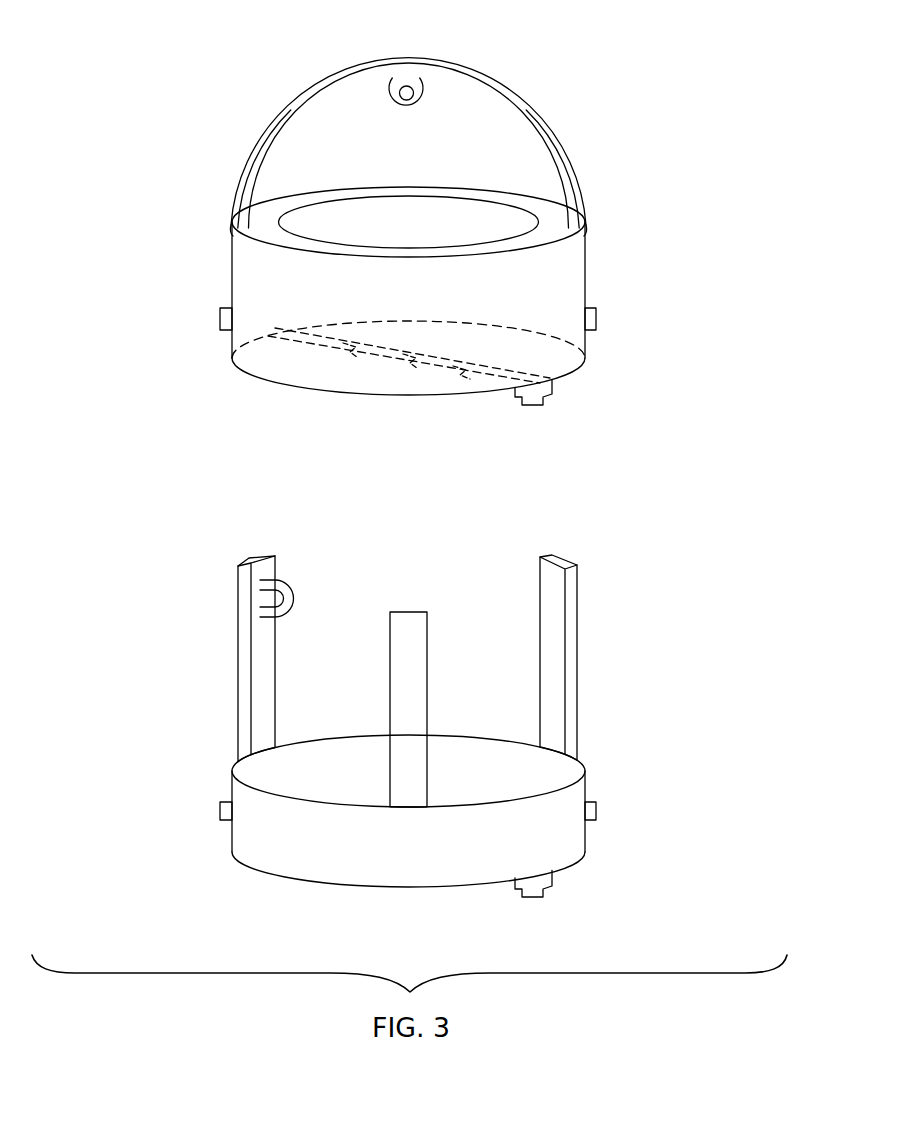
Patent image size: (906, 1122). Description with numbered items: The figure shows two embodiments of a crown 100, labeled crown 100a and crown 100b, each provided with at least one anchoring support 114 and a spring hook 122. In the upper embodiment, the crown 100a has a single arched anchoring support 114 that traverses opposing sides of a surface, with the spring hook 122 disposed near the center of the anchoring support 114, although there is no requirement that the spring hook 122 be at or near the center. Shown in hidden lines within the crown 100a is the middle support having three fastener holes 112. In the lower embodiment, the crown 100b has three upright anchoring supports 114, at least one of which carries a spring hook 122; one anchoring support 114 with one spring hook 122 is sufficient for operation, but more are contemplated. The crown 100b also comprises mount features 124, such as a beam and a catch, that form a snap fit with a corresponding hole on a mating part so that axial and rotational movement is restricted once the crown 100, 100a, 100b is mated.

The crown 100 is at (457, 367).
The crown 100a is at (485, 293).
The crown 100b is at (630, 672).
The fastener holes 112 is at (343, 345).
The anchoring support 114 is at (517, 100).
The spring hook 122 is at (418, 103).
The mount features 124 is at (220, 320).